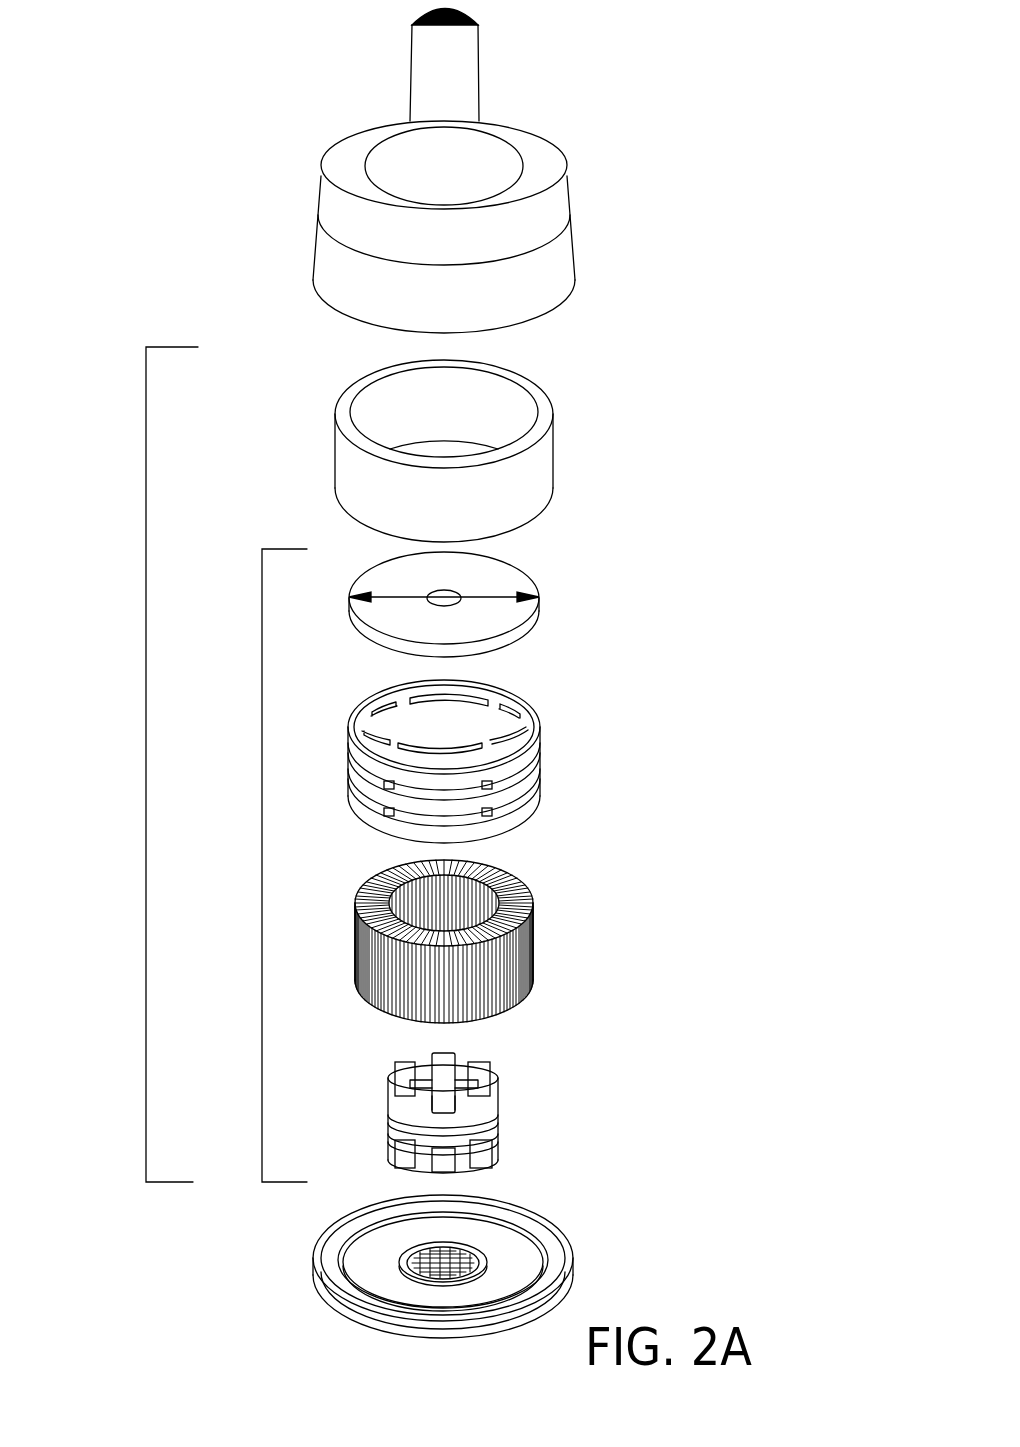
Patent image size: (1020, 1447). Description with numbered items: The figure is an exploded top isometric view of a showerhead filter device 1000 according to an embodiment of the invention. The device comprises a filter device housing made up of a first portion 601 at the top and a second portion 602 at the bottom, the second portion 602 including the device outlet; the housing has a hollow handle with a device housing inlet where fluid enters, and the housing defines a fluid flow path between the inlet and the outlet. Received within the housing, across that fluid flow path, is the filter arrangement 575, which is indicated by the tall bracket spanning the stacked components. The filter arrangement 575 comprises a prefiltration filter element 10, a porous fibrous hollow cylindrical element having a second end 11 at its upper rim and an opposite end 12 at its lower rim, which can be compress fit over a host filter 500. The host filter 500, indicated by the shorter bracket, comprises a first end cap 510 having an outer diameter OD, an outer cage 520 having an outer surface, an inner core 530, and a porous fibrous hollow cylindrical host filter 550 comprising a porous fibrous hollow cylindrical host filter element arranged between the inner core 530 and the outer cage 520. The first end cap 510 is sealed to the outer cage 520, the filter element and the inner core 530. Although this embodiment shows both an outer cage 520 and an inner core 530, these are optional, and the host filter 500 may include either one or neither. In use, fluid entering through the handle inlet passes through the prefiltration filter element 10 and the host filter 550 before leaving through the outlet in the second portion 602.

The showerhead filter device 1000 is at (260, 97).
The first portion 601 is at (486, 152).
The second end 11 is at (538, 393).
The prefiltration filter element 10 is at (491, 435).
The lower edge of ring 12 is at (537, 515).
The first end cap 510 is at (541, 606).
The outer cage 520 is at (544, 732).
The porous fibrous hollow cylindrical host filter 550 is at (533, 940).
The inner core 530 is at (500, 1102).
The second portion 602 is at (546, 1228).
The filter arrangement 575 is at (146, 763).
The host filter 500 is at (262, 862).